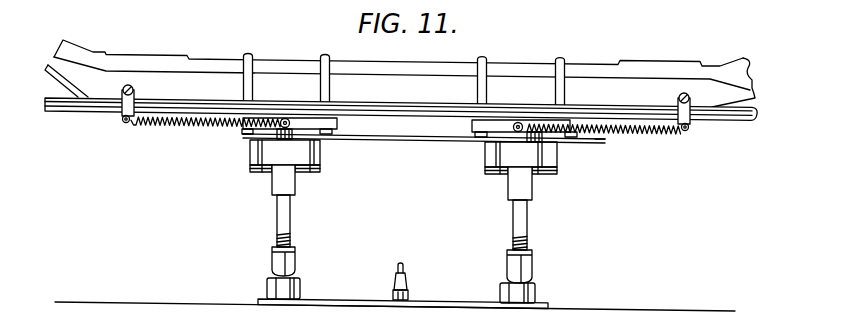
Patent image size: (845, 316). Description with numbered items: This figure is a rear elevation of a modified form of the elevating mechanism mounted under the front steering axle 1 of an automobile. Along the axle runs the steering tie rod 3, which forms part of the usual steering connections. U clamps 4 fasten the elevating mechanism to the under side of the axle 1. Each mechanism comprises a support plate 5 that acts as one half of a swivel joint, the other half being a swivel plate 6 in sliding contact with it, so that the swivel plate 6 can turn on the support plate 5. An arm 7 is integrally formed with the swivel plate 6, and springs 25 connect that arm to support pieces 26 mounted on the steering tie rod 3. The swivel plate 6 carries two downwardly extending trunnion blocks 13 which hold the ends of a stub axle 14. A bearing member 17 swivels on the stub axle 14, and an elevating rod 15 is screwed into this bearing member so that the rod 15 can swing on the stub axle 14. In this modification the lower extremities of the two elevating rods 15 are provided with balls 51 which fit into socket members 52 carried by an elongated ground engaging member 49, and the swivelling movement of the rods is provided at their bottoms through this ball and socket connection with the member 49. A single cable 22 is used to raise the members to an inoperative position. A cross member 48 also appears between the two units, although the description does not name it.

The steering axle 1 is at (628, 82).
The steering tie rod 3 is at (731, 124).
The U clamps 4 is at (323, 54).
The support plate 5 is at (338, 128).
The swivel plate 6 is at (253, 134).
The arm 7 is at (281, 142).
The trunnion blocks 13 is at (262, 173).
The stub axle 14 is at (250, 158).
The elevating rod 15 is at (290, 217).
The bearing member 17 is at (272, 188).
The cable 22 is at (404, 270).
The springs 25 is at (190, 128).
The support pieces 26 is at (123, 121).
The connecting bar 48 is at (402, 140).
The elongated ground engaging member 49 is at (373, 299).
The balls 51 is at (296, 283).
The socket members 52 is at (267, 284).